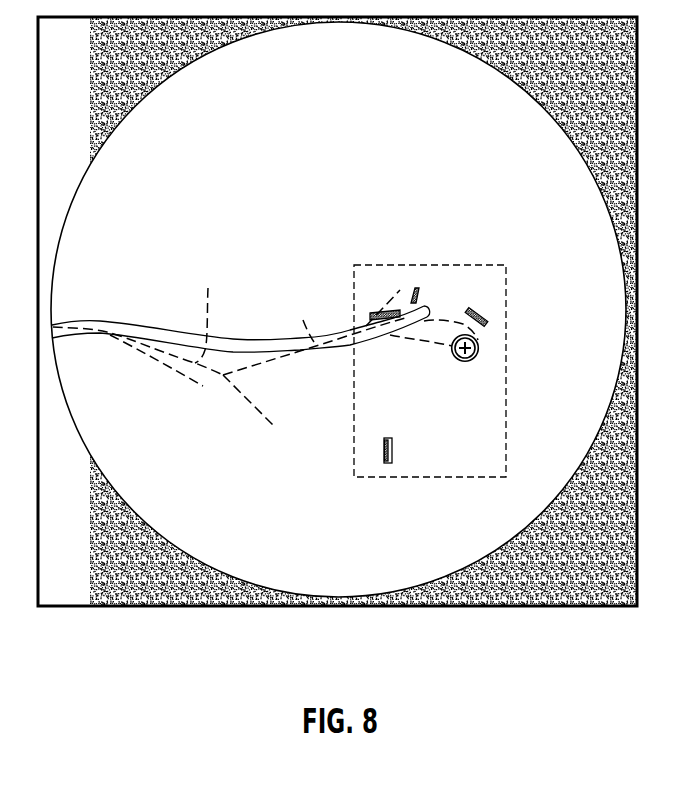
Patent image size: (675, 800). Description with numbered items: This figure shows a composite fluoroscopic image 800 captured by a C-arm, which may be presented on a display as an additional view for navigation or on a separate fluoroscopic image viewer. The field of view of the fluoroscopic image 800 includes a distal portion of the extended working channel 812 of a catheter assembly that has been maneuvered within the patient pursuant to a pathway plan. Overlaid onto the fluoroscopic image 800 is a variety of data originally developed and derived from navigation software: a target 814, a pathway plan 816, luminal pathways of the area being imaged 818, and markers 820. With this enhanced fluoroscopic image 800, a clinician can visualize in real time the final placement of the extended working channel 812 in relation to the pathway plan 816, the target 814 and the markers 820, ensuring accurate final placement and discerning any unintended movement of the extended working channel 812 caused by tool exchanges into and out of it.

The composite fluoroscopic image 800 is at (255, 628).
The catheter 812 is at (241, 332).
The target 814 is at (491, 351).
The pathway plan 816 is at (260, 383).
The luminal pathways of the area being imaged 818 is at (238, 403).
The markers 820 is at (402, 449).